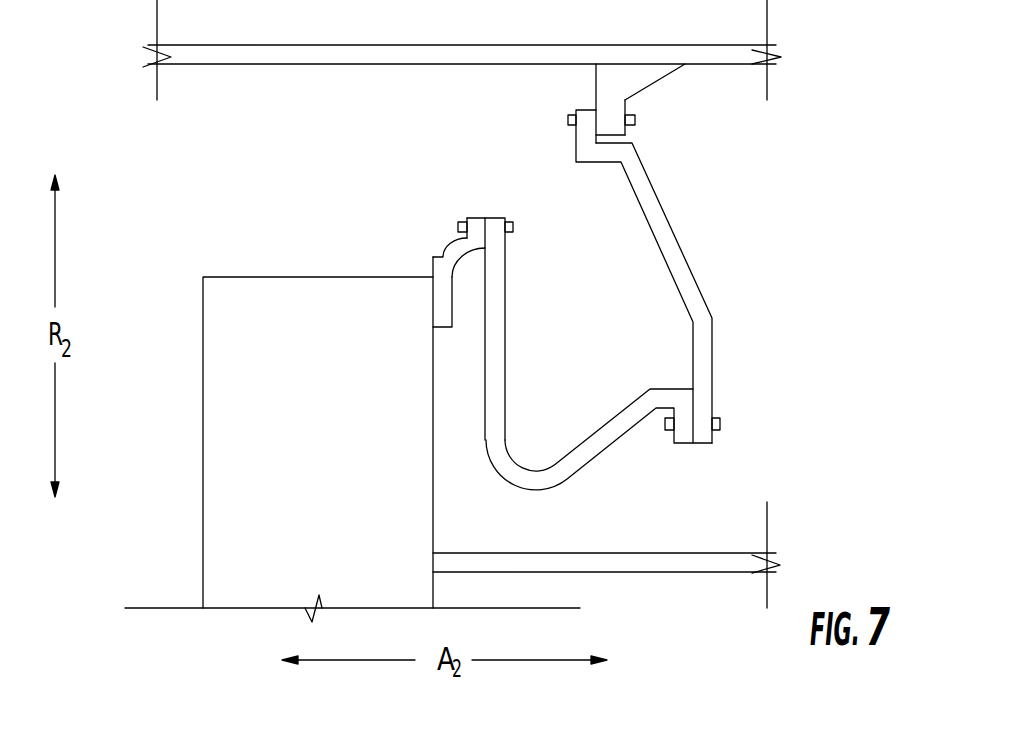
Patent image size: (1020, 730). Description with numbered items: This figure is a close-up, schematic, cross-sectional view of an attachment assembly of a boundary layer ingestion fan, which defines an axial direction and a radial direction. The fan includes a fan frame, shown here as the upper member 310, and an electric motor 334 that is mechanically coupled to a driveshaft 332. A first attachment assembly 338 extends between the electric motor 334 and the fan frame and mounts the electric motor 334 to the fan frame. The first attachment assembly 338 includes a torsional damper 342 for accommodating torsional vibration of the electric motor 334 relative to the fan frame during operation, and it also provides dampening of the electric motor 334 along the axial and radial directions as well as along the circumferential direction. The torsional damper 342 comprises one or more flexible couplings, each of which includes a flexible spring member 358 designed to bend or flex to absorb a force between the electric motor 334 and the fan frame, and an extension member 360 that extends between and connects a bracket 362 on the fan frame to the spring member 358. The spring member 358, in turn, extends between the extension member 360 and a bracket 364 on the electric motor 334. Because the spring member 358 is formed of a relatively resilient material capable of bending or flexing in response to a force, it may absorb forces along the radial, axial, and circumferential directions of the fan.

The first frame member (upper beam) 310 is at (340, 53).
The bracket 362 is at (613, 90).
The extension member 360 is at (648, 209).
The first attachment assembly 338 is at (798, 215).
The bracket 364 is at (438, 263).
The electric motor 334 is at (218, 463).
The driveshaft 332 is at (513, 560).
The flexible spring member 358 is at (548, 490).
The torsional damper 342 is at (788, 473).